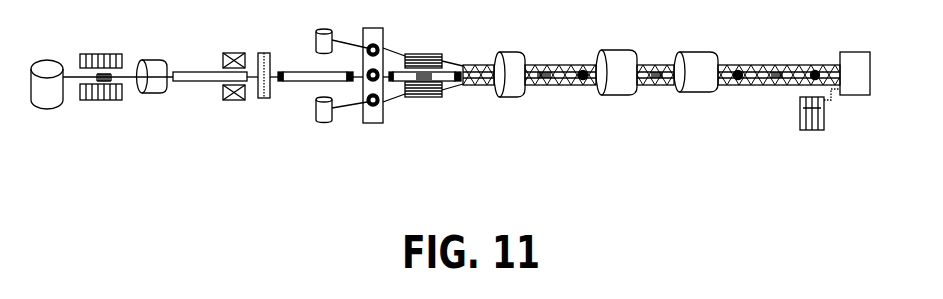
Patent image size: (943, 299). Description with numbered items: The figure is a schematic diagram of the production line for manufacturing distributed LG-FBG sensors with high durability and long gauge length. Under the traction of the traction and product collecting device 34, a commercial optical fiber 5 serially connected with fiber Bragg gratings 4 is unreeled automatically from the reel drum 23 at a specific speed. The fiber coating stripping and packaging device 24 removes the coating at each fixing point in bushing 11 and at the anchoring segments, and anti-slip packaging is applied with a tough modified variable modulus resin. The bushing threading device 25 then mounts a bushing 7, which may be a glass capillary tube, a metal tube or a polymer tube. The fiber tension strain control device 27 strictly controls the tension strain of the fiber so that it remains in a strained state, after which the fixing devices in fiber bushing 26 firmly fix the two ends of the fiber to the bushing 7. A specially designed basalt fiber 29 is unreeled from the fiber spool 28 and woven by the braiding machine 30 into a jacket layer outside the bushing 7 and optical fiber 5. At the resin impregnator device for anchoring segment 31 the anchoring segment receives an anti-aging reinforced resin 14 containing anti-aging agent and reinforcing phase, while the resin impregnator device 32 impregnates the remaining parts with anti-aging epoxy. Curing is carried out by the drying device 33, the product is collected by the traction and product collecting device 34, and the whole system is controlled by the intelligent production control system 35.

The reel drum 23 is at (48, 95).
The commercial optical fiber 5 is at (123, 75).
The fiber coating stripping and packaging device 24 is at (90, 53).
The fiber Bragg grating 4 is at (105, 84).
The bushing threading device 25 is at (151, 87).
The bushing 7 is at (180, 73).
The fixing device in fiber bushing 26 is at (230, 91).
The fiber tension strain control device 27 is at (267, 89).
The fixing point in bushing 11 is at (280, 72).
The fiber spool 28 is at (332, 115).
The basalt fiber 29 is at (394, 52).
The braiding machine 30 is at (422, 98).
The resin impregnator device for anchoring segment 31 is at (508, 100).
The anti-aging reinforced resin 14 is at (581, 78).
The resin impregnator device 32 is at (611, 48).
The drying device 33 is at (702, 93).
The traction and product collecting device 34 is at (858, 89).
The intelligent production control system 35 is at (811, 119).